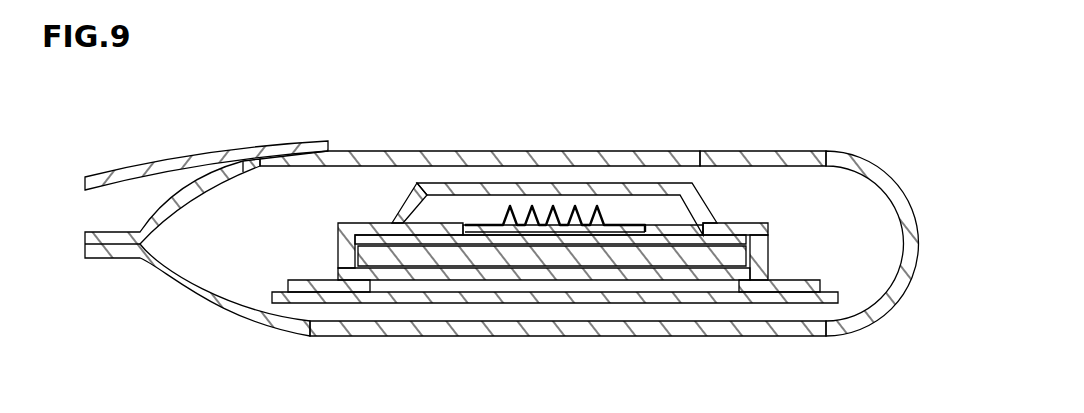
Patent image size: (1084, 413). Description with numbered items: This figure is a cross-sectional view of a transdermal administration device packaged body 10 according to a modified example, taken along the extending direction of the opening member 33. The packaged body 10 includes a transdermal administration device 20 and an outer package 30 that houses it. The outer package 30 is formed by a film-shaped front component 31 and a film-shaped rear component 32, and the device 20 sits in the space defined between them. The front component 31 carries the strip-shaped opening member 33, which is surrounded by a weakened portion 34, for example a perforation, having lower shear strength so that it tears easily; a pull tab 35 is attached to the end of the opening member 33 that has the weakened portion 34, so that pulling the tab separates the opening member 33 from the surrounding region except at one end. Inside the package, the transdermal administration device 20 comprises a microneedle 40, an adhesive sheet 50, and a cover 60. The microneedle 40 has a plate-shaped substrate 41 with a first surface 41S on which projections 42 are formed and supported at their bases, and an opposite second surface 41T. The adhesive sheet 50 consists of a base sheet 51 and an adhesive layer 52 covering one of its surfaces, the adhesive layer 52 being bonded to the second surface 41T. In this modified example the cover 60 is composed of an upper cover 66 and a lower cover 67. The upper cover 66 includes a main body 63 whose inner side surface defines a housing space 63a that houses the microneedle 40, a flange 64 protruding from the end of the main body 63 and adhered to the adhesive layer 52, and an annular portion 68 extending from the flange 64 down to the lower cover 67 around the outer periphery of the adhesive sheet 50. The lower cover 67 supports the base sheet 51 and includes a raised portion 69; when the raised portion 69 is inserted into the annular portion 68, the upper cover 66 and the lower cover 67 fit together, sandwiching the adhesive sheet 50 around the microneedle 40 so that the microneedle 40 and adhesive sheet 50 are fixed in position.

The transdermal administration device packaged body 10 is at (199, 119).
The transdermal administration device 20 is at (297, 231).
The outer package 30 is at (919, 244).
The front component 31 is at (808, 151).
The rear component 32 is at (772, 337).
The opening member 33 is at (506, 151).
The weakened portion 34 is at (244, 156).
The pull tab 35 is at (128, 174).
The microneedle 40 is at (582, 123).
The substrate 41 is at (621, 236).
The first surface 41S is at (466, 226).
The second surface 41T is at (506, 237).
The projection 42 is at (606, 226).
The adhesive sheet 50 is at (583, 367).
The base sheet 51 is at (602, 258).
The adhesive layer 52 is at (650, 242).
The cover 60 is at (305, 370).
The main body 63 is at (706, 199).
The housing space 63a is at (440, 190).
The flange 64 is at (752, 225).
The upper cover 66 is at (297, 281).
The lower cover 67 is at (300, 304).
The annular portion 68 is at (770, 235).
The raised portion 69 is at (769, 268).